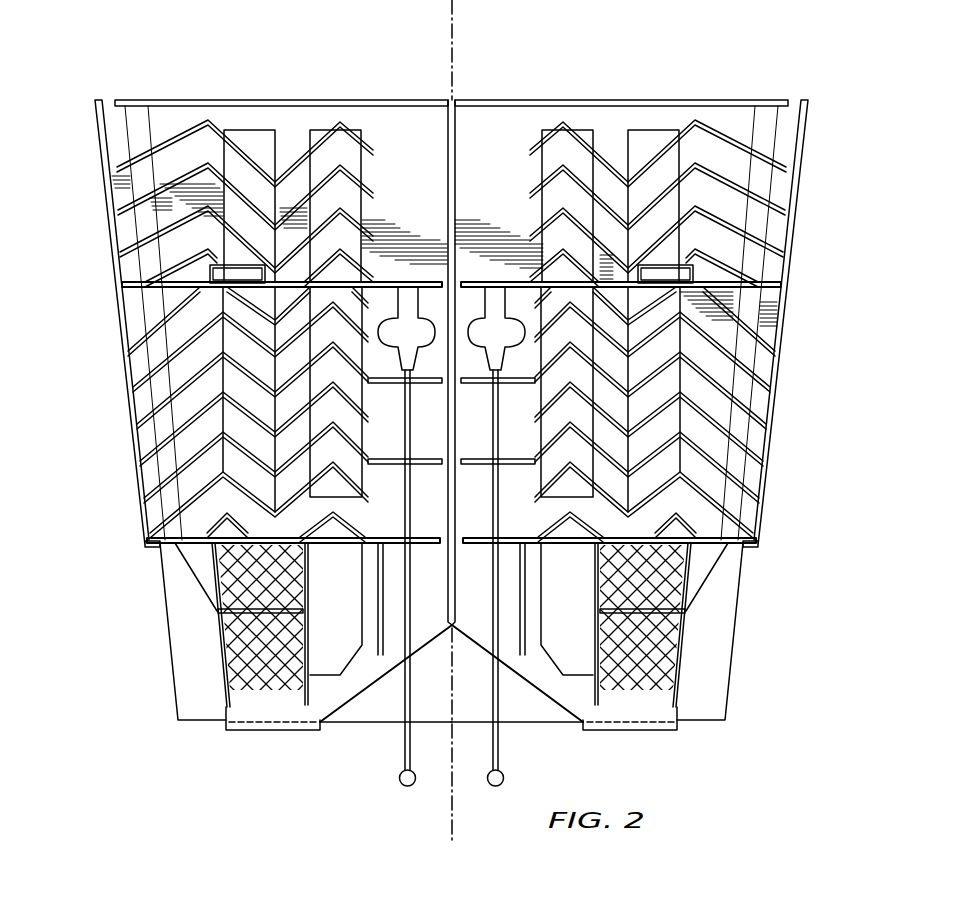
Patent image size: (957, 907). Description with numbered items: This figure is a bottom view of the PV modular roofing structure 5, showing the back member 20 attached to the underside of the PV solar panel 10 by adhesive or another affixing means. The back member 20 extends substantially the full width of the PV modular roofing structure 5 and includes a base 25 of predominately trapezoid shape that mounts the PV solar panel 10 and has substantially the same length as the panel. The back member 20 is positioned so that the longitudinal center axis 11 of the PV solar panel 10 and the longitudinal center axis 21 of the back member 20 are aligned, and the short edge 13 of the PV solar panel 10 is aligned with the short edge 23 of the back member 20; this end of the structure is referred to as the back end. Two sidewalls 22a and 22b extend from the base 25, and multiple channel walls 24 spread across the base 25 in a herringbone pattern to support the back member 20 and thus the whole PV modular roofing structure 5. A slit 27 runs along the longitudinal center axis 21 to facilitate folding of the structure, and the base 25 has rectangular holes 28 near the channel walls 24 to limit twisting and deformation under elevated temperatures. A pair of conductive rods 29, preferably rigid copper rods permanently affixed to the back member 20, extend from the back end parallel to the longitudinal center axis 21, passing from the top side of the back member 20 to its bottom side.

The PV modular roofing structure 5 is at (325, 56).
The PV solar panel 10 is at (185, 640).
The longitudinal center axis 11 is at (412, 420).
The longitudinal center axis 21 is at (451, 72).
The short edge 13 is at (345, 725).
The back member 20 is at (240, 718).
The sidewall 22a is at (112, 312).
The sidewall 22b is at (770, 437).
The short edge 23 is at (268, 732).
The channel walls 24 is at (117, 156).
The base 25 is at (420, 169).
The slit 27 is at (456, 172).
The rectangular holes 28 is at (272, 147).
The conductive rods 29 is at (402, 740).